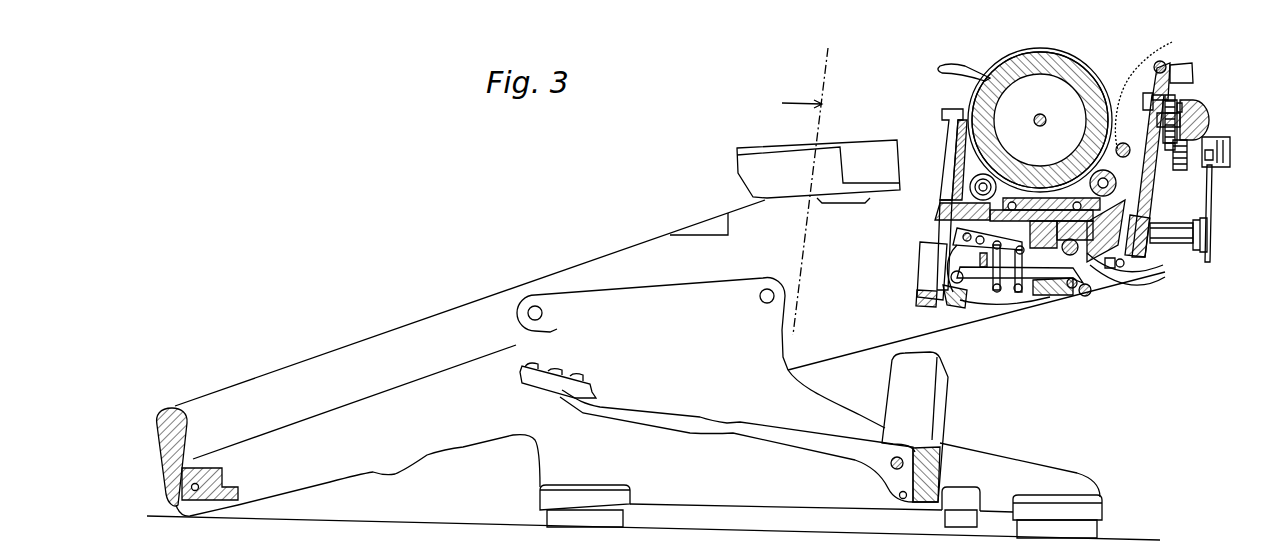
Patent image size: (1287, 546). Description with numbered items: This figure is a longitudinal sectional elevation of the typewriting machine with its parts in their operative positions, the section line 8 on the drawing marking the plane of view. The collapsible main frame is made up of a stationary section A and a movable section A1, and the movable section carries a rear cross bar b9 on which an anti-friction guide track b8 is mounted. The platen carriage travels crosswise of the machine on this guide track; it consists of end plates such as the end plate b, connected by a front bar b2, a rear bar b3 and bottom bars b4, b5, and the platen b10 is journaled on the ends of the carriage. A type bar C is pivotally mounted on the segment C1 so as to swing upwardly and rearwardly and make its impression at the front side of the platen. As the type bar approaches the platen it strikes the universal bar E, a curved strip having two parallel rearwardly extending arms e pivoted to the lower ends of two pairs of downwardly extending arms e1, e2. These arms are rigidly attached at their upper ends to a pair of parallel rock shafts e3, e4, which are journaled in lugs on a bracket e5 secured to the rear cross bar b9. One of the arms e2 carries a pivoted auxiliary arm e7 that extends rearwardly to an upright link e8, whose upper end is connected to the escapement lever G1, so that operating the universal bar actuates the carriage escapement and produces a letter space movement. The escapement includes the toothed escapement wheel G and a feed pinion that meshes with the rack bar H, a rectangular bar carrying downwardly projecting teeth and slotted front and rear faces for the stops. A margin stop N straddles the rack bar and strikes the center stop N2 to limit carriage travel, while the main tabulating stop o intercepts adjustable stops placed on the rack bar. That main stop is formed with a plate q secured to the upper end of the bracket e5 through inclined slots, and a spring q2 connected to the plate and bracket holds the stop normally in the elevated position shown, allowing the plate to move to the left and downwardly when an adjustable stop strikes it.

The stationary section of the main frame A is at (629, 375).
The movable section of the main frame A1 is at (470, 329).
The type bar C is at (737, 418).
The segment C1 is at (945, 397).
The section line 8 is at (805, 196).
The end plate b is at (965, 157).
The front bar b2 is at (970, 186).
The rear bar b3 is at (1114, 115).
The bottom bar b4 is at (1023, 198).
The bottom bar b5 is at (1053, 210).
The anti-friction guide track b8 is at (1120, 273).
The rear cross bar b9 is at (1133, 260).
The platen b10 is at (1106, 68).
The plate q is at (1178, 64).
The spring q2 is at (1160, 60).
The main tabulating stop o is at (1190, 70).
The escapement wheel G is at (1157, 101).
The escapement lever G1 is at (1190, 90).
The margin stop N is at (1197, 95).
The rack bar H is at (1208, 108).
The center stop N2 is at (1212, 137).
The universal bar E is at (933, 258).
The rearwardly extending arms e is at (930, 280).
The downwardly extending arms e1 is at (957, 248).
The downwardly extending arms e2 is at (1062, 296).
The rock shaft e3 is at (957, 228).
The rock shaft e4 is at (1086, 297).
The bracket e5 is at (1153, 212).
The auxiliary arm e7 is at (1123, 270).
The upright link e8 is at (1133, 267).